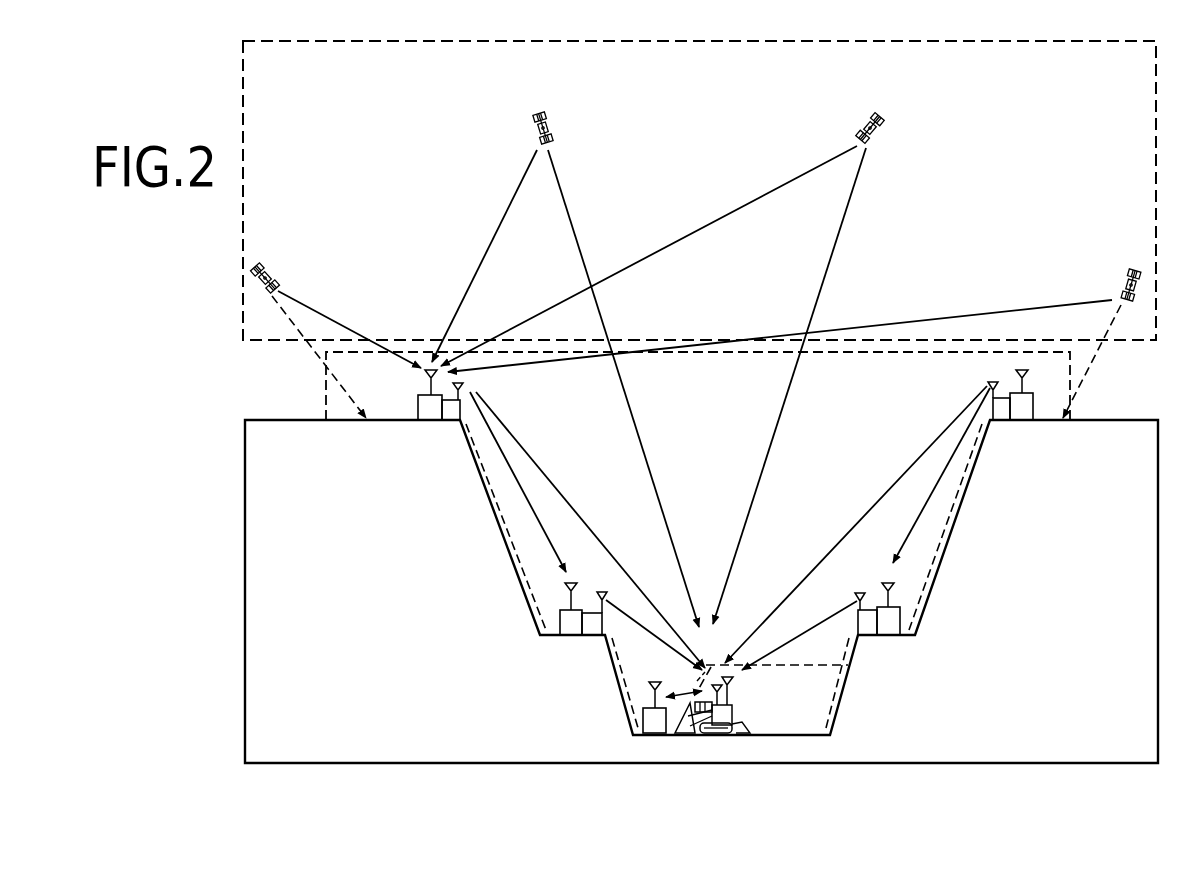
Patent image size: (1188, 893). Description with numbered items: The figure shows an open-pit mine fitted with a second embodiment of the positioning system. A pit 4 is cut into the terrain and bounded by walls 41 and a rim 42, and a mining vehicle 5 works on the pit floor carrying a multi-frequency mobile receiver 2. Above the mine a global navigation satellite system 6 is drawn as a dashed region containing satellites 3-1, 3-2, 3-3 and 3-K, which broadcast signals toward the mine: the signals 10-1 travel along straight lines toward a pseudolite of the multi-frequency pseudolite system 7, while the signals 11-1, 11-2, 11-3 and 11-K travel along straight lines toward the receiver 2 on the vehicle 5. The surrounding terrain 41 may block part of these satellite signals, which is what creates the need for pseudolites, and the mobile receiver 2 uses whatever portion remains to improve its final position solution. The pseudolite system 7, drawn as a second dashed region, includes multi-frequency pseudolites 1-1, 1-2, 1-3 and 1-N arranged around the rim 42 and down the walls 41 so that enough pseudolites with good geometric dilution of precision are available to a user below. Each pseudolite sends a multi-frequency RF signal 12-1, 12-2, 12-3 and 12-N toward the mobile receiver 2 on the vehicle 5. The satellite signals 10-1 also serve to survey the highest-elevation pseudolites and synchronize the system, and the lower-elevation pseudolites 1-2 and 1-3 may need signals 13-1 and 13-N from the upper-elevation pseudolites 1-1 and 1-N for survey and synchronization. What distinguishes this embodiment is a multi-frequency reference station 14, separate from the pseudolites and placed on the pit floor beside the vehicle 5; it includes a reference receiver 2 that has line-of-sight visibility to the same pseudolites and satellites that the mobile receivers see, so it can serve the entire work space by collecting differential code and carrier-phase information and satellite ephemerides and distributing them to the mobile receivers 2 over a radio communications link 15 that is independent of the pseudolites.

The multi-frequency mobile receiver 2 is at (784, 705).
The satellite 3-1 is at (267, 261).
The satellite 3-2 is at (540, 114).
The satellite 3-3 is at (880, 114).
The satellite 3-K is at (1134, 272).
The pit 4 is at (300, 423).
The mining vehicle 5 is at (729, 735).
The global navigation satellite system 6 is at (699, 190).
The multi-frequency pseudolite system 7 is at (322, 380).
The satellite signal 10-1 is at (695, 259).
The satellite signal 11-1 is at (309, 357).
The satellite signal 11-2 is at (623, 388).
The satellite signal 11-3 is at (798, 386).
The satellite signal 11-K is at (1111, 361).
The multi-frequency pseudolite 1-1 is at (412, 483).
The multi-frequency pseudolite 1-2 is at (573, 609).
The multi-frequency pseudolite 1-3 is at (888, 609).
The multi-frequency pseudolite 1-N is at (1029, 395).
The multi-frequency RF signal 12-1 is at (587, 522).
The multi-frequency RF signal 12-2 is at (654, 635).
The multi-frequency RF signal 12-3 is at (799, 635).
The multi-frequency RF signal 12-N is at (856, 524).
The pseudolite-to-pseudolite signal 13-1 is at (535, 533).
The pseudolite-to-pseudolite signal 13-N is at (929, 475).
The multi-frequency reference station 14 is at (652, 733).
The radio communication link 15 is at (697, 723).
The pit walls 41 is at (487, 497).
The pit rim 42 is at (453, 425).